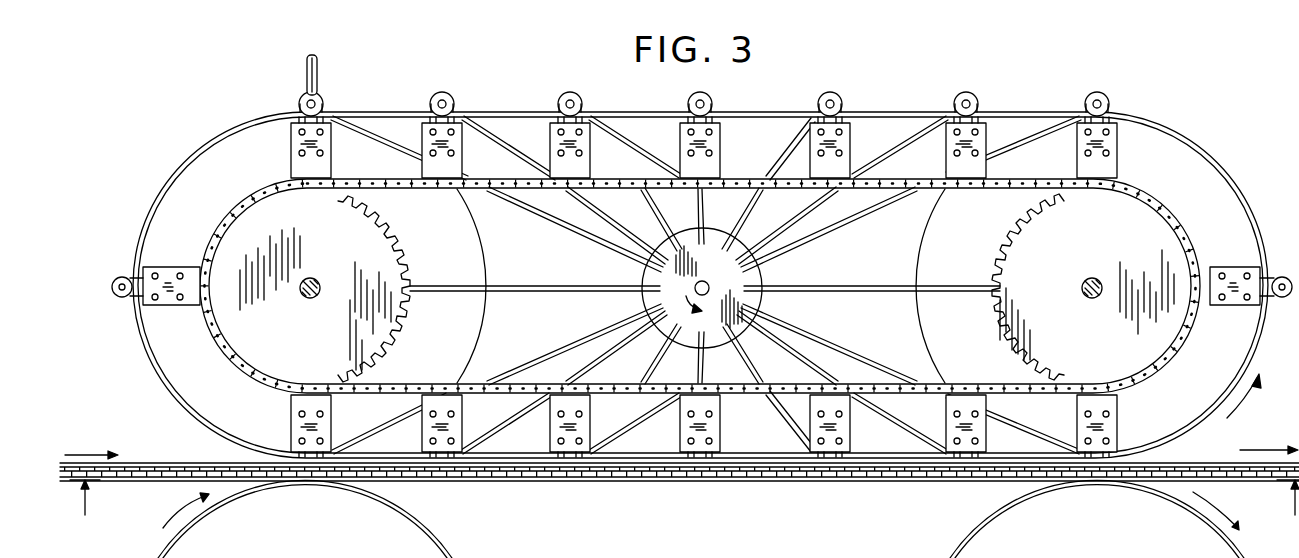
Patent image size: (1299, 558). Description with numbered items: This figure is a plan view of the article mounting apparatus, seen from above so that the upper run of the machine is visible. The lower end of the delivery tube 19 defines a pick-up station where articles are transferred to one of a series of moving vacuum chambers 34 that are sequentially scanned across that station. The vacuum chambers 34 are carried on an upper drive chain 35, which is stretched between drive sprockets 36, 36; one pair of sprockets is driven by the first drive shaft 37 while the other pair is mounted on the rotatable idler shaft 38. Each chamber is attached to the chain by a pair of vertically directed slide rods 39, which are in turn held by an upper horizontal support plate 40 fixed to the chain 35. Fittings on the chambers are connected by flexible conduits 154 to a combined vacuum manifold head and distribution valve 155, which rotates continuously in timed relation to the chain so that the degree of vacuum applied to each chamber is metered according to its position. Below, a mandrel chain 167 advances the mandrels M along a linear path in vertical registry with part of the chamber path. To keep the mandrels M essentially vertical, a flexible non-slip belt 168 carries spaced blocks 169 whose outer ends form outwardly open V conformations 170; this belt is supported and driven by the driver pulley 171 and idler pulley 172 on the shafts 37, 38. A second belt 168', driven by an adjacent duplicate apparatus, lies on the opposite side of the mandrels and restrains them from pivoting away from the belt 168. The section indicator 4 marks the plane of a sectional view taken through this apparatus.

The delivery tube 19 is at (306, 78).
The vacuum chambers 34 is at (432, 100).
The upper horizontal support plate 40 is at (550, 138).
The V conformations 170 is at (961, 97).
The spaced blocks 169 is at (967, 167).
The flexible non-slip belt 168 is at (700, 282).
The slide rods 39 is at (837, 135).
The drive chain 35 is at (734, 180).
The drive sprockets 36 is at (393, 248).
The first drive shaft 37 is at (314, 281).
The rotatable idler shaft 38 is at (1094, 281).
The driver pulley 171 is at (481, 243).
The idler pulley 172 is at (919, 250).
The flexible conduits 154 is at (599, 292).
The combined vacuum manifold head and distribution valve 155 is at (670, 327).
The mandrel chain 167 is at (145, 463).
The second belt 168' is at (507, 504).
The mandrels M is at (306, 486).
The section line 4- 4 is at (682, 496).